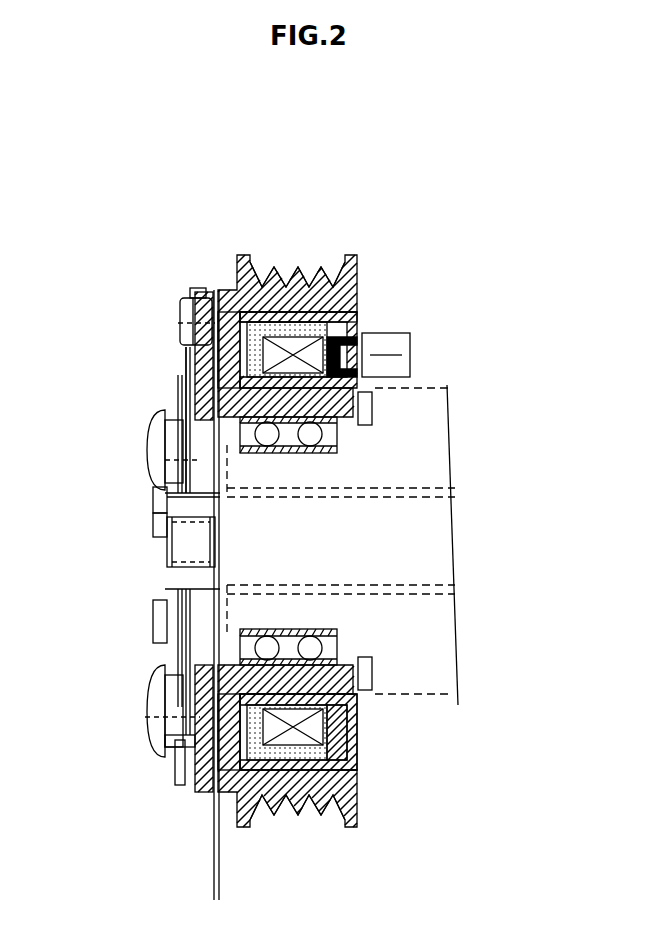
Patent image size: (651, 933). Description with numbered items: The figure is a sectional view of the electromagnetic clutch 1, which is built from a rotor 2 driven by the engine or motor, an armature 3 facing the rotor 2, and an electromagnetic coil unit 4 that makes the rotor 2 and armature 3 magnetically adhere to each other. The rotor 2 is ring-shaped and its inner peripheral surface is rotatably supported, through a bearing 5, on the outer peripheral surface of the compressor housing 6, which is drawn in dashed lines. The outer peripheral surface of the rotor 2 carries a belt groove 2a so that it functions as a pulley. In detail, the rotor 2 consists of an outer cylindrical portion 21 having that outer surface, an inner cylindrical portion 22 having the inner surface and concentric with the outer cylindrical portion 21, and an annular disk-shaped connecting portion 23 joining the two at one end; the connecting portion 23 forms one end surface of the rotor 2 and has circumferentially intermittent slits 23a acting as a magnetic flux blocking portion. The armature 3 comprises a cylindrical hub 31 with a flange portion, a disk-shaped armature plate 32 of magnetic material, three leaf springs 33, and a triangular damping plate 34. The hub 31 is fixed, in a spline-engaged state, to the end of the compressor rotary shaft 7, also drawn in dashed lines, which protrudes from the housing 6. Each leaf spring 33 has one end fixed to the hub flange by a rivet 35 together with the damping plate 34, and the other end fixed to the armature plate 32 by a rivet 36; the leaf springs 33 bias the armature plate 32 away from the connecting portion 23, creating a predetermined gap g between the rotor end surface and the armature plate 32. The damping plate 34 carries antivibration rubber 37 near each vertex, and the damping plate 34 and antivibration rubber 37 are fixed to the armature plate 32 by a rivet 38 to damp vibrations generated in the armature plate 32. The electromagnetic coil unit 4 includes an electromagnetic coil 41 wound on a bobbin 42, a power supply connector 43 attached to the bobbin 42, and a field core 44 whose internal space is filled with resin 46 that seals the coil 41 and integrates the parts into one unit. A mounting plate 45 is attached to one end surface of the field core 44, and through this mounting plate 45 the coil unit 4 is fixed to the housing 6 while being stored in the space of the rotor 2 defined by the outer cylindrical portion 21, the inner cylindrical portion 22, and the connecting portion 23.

The electromagnetic clutch 1 is at (214, 198).
The rotor 2 is at (367, 254).
The belt groove 2a is at (300, 258).
The outer cylindrical portion 21 is at (398, 298).
The inner cylindrical portion 22 is at (380, 412).
The connecting portion 23 is at (216, 290).
The slits 23a is at (193, 288).
The armature 3 is at (124, 746).
The hub 31 is at (167, 577).
The armature plate 32 is at (203, 793).
The leaf springs 33 is at (185, 355).
The damping plate 34 is at (170, 400).
The rivet 35 is at (165, 497).
The rivet 36 is at (182, 313).
The antivibration rubber 37 is at (173, 752).
The rivet 38 is at (167, 452).
The electromagnetic coil unit 4 is at (426, 322).
The electromagnetic coil 41 is at (293, 740).
The bobbin 42 is at (352, 760).
The power supply connector 43 is at (410, 364).
The field core 44 is at (355, 760).
The mounting plate 45 is at (372, 715).
The resin 46 is at (340, 327).
The bearing 5 is at (345, 440).
The housing 6 is at (448, 650).
The rotary shaft 7 is at (440, 548).
The gap g is at (220, 887).